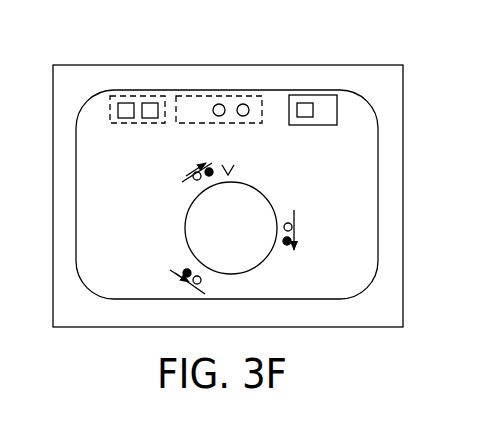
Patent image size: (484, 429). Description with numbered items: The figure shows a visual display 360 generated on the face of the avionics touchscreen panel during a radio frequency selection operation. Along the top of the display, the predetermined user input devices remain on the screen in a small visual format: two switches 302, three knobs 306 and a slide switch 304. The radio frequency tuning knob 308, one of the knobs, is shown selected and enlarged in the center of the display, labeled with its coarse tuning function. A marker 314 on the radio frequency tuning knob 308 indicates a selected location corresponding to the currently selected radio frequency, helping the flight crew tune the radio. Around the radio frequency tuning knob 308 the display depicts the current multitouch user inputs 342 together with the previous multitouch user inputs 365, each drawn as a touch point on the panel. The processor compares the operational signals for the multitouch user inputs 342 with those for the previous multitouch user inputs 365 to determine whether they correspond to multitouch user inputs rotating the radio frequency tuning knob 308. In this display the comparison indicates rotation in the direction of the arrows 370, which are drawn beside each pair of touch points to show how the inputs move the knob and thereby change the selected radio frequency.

The visual display 360 is at (38, 72).
The switches 302 is at (145, 95).
The knobs 306 is at (243, 95).
The slide switch 304 is at (325, 95).
The radio frequency tuning knob 308 is at (185, 225).
The marker 314 is at (234, 166).
The previous multitouch user inputs 365 is at (209, 170).
The multitouch user inputs 342 is at (194, 178).
The arrows 370 is at (196, 168).